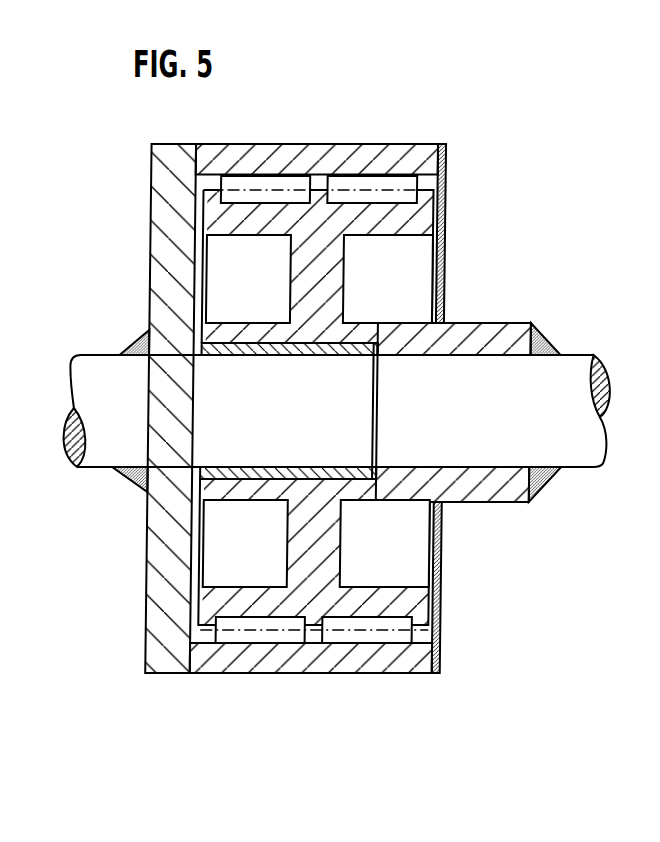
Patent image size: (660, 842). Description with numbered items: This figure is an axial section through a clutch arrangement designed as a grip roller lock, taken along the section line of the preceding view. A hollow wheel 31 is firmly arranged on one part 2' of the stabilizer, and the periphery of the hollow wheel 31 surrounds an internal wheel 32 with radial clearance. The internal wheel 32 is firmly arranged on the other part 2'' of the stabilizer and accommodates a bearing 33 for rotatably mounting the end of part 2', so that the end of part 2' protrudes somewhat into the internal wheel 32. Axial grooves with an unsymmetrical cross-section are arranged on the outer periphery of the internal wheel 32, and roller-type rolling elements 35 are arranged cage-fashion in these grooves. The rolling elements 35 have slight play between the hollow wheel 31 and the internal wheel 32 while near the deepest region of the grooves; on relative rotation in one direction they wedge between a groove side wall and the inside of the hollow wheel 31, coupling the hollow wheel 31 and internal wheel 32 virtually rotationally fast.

The hollow wheel 31 is at (156, 231).
The internal wheel 32 is at (346, 272).
The bearing 33 is at (252, 348).
The roller-type rolling elements 35 is at (262, 183).
The part of the stabilizer 2' is at (218, 425).
The other part of the stabilizer 2'' is at (493, 428).